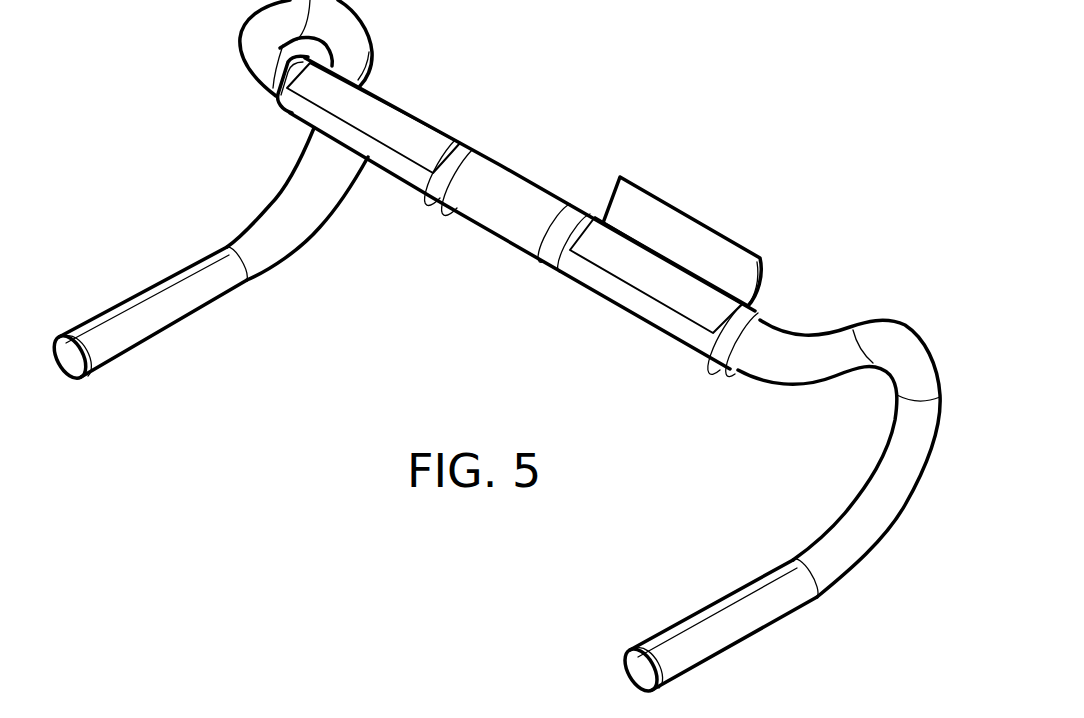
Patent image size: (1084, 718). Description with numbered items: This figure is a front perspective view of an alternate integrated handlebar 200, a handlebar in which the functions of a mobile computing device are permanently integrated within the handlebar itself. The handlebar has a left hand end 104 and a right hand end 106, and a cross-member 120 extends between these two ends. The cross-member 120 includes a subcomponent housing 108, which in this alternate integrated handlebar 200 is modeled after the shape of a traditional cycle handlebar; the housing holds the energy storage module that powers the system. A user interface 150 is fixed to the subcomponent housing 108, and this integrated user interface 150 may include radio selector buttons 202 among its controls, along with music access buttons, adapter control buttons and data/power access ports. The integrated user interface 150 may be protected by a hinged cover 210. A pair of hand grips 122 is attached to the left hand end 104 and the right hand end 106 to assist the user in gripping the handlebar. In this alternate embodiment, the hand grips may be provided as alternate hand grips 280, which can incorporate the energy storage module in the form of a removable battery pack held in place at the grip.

The alternate integrated handlebar 200 is at (213, 122).
The left hand end 104 is at (167, 277).
The right hand end 106 is at (668, 682).
The subcomponent housing 108 is at (357, 175).
The cross-member 120 is at (488, 262).
The hand grips 122 is at (128, 349).
The user interface 150 is at (663, 288).
The radio selector buttons 202 is at (262, 258).
The hinged cover 210 is at (544, 319).
The alternate hand grips 280 is at (133, 384).